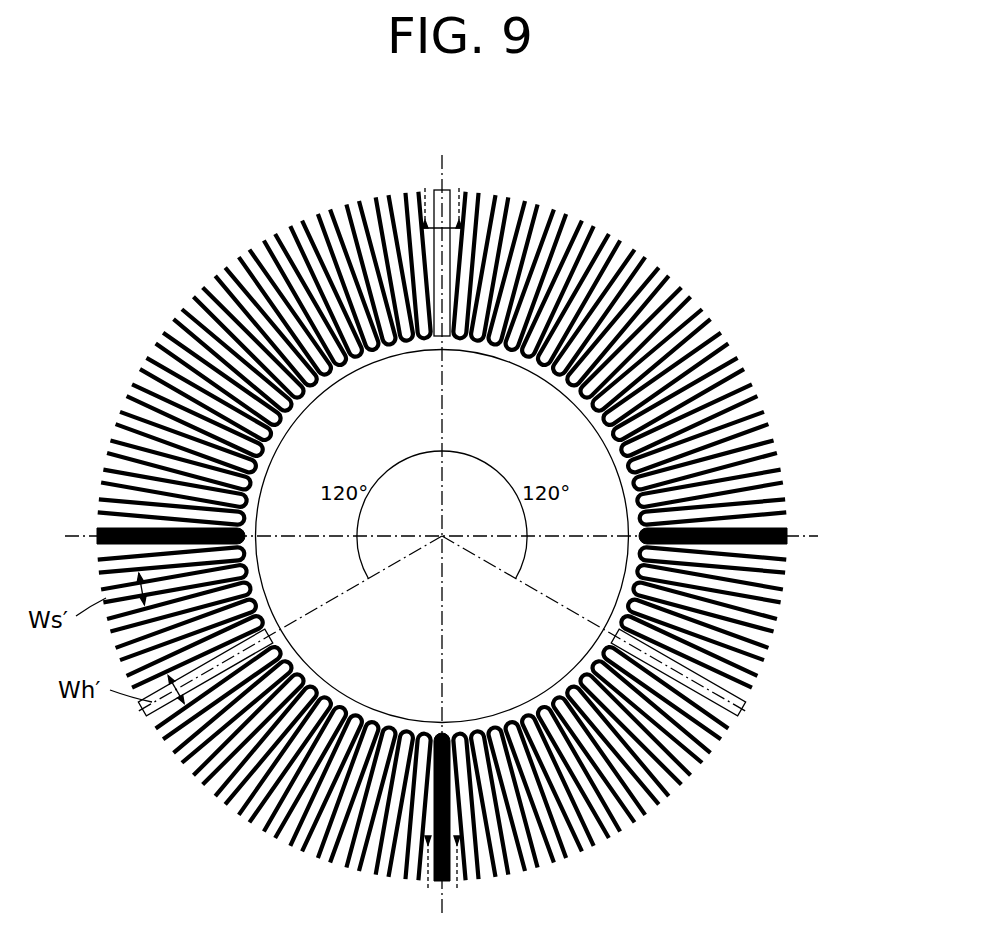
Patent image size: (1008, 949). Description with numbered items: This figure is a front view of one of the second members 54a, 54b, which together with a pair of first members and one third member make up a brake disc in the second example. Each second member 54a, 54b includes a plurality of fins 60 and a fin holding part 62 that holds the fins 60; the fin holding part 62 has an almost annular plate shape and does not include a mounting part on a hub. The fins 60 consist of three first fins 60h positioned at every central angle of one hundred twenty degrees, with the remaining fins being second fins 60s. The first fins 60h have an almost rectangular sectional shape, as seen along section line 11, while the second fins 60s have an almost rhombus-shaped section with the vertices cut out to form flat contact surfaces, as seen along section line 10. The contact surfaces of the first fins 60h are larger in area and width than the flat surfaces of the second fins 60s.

The fins 60 is at (146, 328).
The second fins 60s is at (558, 208).
The first fins 60h is at (449, 190).
The fin holding part 62 is at (547, 379).
The second member 54a is at (628, 232).
The second member 54b is at (578, 300).
The section line 10- 10 is at (442, 871).
The section line 11- 11 is at (444, 197).